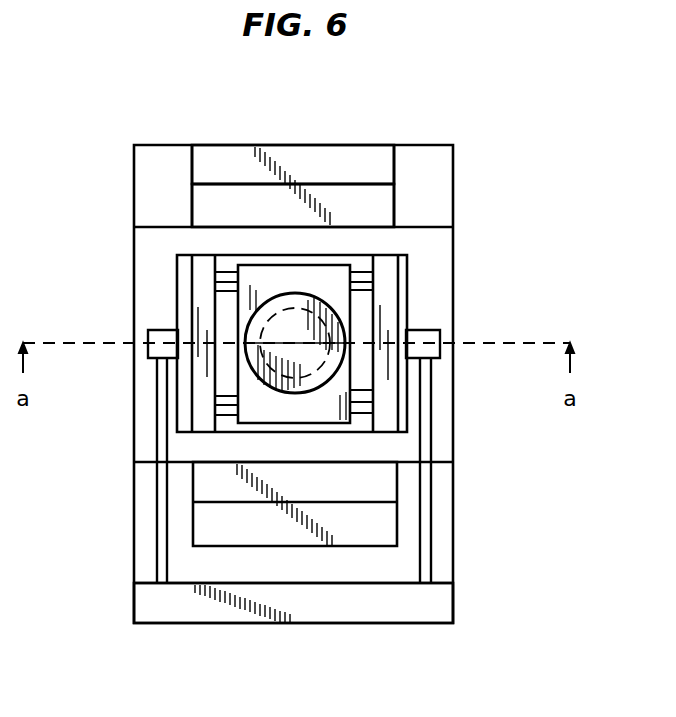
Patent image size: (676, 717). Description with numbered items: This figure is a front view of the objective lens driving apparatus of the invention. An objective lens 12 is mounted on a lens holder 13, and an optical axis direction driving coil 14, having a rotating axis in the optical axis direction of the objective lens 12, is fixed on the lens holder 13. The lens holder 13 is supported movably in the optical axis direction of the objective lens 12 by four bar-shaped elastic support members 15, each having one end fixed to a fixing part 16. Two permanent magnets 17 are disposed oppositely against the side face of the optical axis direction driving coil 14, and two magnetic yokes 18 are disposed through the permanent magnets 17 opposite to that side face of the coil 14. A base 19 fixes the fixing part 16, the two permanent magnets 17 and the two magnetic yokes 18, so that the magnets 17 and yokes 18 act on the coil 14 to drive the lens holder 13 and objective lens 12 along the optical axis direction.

The objective lens 12 is at (322, 300).
The lens holder 13 is at (245, 303).
The optical axis direction driving coil 14 is at (317, 253).
The bar-shaped elastic support members 15 is at (160, 436).
The fixing part 16 is at (160, 600).
The permanent magnets 17 is at (325, 202).
The magnetic yokes 18 is at (272, 162).
The base 19 is at (155, 182).